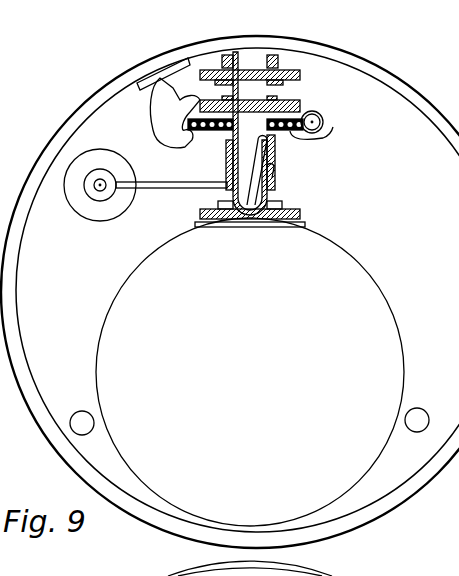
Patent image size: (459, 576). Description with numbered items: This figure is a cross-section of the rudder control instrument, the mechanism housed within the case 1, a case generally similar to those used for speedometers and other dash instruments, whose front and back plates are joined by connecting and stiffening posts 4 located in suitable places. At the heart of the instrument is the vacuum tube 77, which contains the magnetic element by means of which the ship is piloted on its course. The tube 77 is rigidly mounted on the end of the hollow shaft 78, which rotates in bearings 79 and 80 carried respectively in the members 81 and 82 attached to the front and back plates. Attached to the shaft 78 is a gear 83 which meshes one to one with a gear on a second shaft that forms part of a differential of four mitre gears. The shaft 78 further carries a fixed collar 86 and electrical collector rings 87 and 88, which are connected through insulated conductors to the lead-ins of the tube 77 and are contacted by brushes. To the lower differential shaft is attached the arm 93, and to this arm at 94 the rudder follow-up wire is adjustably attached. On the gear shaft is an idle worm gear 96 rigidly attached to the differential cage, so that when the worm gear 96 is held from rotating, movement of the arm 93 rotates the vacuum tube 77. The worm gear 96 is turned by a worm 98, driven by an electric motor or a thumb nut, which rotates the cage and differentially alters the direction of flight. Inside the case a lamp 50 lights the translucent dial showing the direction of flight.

The case 1 is at (371, 66).
The connecting and stiffening posts 4 is at (75, 412).
The lamp 50 is at (168, 103).
The vacuum tube 77 is at (250, 372).
The hollow shaft 78 is at (284, 91).
The bearing 79 is at (290, 84).
The bearing 80 is at (283, 201).
The member 81 is at (288, 68).
The member 82 is at (304, 215).
The gear 83 is at (298, 106).
The fixed collar 86 is at (221, 60).
The electrical collector ring 87 is at (276, 157).
The electrical collector ring 88 is at (274, 170).
The arm 93 is at (157, 189).
The attachment point for rudder follow-up wire 94 is at (113, 175).
The worm gear 96 is at (324, 138).
The worm 98 is at (326, 121).